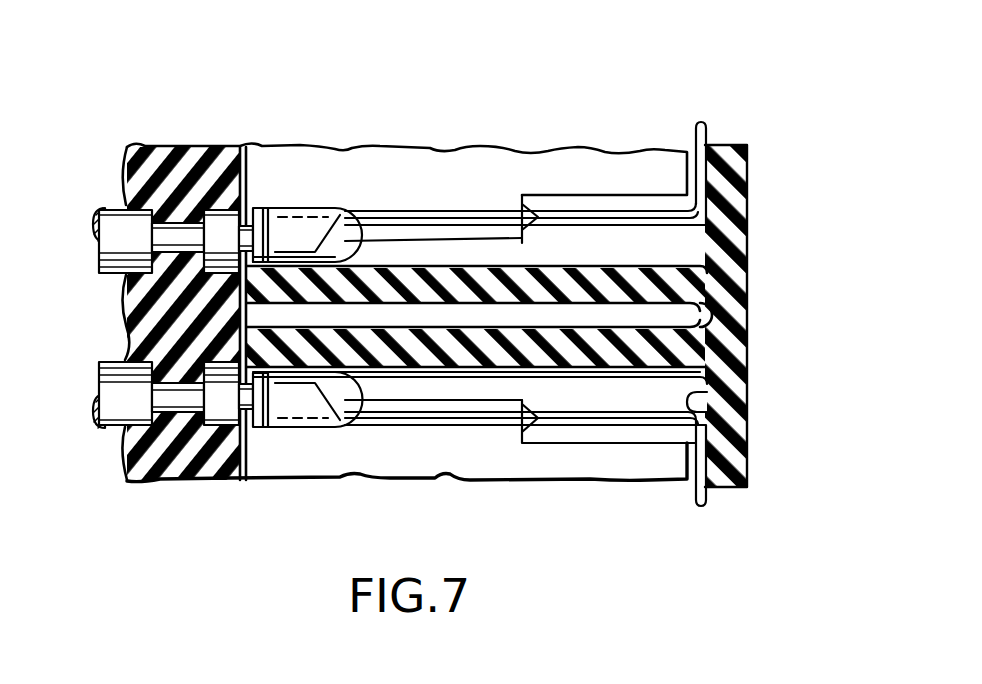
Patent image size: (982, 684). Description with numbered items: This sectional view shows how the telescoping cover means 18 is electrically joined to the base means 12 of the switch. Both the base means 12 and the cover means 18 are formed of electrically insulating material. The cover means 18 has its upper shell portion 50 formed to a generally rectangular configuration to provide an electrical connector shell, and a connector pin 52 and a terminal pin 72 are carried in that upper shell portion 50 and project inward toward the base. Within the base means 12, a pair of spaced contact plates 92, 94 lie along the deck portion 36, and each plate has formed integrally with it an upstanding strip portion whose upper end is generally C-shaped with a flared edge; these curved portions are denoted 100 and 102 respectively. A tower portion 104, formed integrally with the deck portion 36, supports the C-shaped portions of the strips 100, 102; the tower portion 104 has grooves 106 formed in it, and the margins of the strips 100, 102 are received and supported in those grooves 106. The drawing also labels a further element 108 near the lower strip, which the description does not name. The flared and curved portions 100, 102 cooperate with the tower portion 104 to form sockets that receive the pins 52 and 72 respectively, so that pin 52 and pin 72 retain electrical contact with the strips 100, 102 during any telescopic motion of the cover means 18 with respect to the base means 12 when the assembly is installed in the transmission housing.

The base means 12 is at (757, 228).
The cover means 18 is at (356, 136).
The deck portion 36 is at (707, 397).
The upper shell portion 50 is at (170, 146).
The connector pin 52 is at (99, 208).
The terminal pin 72 is at (100, 432).
The contact plate 92 is at (696, 140).
The contact plate 94 is at (697, 486).
The C-shaped strip portion 100 is at (291, 208).
The C-shaped strip portion 102 is at (293, 430).
The tower portion 104 is at (552, 262).
The grooves 106 is at (617, 228).
The lower insert 108 is at (590, 414).